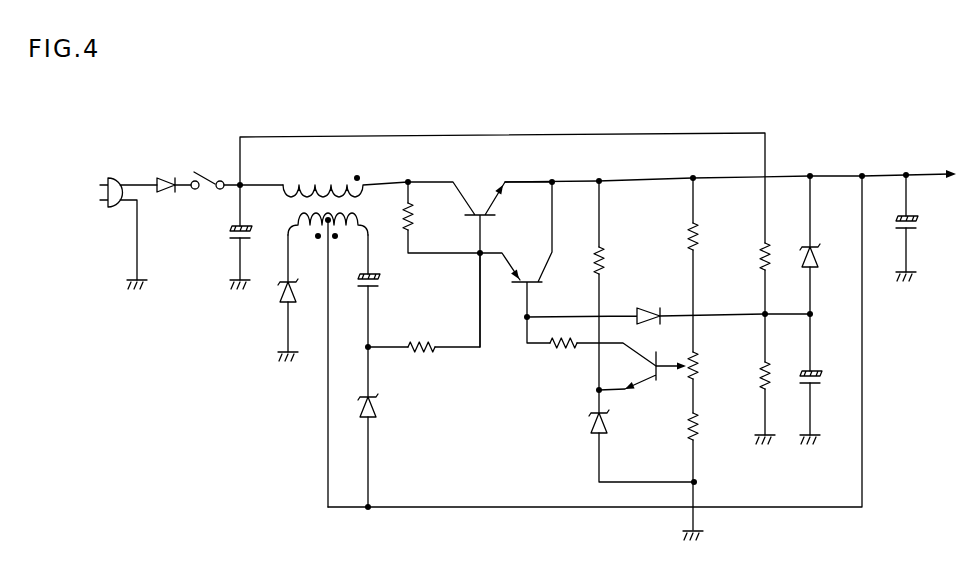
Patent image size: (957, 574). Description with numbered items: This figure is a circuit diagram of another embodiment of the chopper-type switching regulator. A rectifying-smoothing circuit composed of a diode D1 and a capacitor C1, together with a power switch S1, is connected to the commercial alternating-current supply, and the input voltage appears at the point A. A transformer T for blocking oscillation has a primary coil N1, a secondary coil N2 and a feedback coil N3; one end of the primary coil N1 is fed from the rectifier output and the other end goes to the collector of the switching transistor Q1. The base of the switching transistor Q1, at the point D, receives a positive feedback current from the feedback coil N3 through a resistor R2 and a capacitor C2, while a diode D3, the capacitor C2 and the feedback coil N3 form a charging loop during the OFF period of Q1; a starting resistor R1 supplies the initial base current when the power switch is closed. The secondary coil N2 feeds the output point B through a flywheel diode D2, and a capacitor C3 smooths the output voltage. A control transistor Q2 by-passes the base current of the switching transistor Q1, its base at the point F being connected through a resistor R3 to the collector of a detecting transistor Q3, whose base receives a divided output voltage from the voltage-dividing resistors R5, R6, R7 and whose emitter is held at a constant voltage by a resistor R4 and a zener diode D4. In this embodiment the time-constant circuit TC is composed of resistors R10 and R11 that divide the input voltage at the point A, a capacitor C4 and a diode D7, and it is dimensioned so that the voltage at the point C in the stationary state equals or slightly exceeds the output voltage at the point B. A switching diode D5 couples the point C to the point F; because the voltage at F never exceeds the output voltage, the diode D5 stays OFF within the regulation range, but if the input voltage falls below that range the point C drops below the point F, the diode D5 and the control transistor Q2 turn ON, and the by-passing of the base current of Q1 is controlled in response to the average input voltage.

The diode D1 is at (174, 200).
The power switch S1 is at (237, 170).
The point A is at (242, 184).
The capacitor C1 is at (237, 237).
The transformer T is at (345, 332).
The primary coil N1 is at (345, 177).
The secondary coil N2 is at (310, 245).
The feedback coil N3 is at (346, 245).
The flywheel diode D2 is at (280, 298).
The capacitor C2 is at (366, 291).
The starting resistor R1 is at (441, 216).
The switching transistor Q1 is at (480, 257).
The point D is at (478, 256).
The control transistor Q2 is at (517, 248).
The resistor R2 is at (422, 315).
The diode D3 is at (381, 428).
The point F is at (526, 319).
The switching diode D5 is at (646, 304).
The resistor R3 is at (591, 346).
The detecting transistor Q3 is at (642, 371).
The resistor R4 is at (611, 284).
The zener diode D4 is at (631, 436).
The voltage-dividing resistor R5 is at (681, 263).
The voltage-dividing resistor R6 is at (704, 382).
The voltage-dividing resistor R7 is at (683, 476).
The dividing resistor R10 is at (779, 278).
The point C is at (766, 312).
The dividing resistor R11 is at (777, 379).
The output point B is at (811, 172).
The diode D7 is at (822, 246).
The time-constant circuit TC is at (797, 328).
The capacitor C4 is at (811, 379).
The capacitor C3 is at (903, 226).